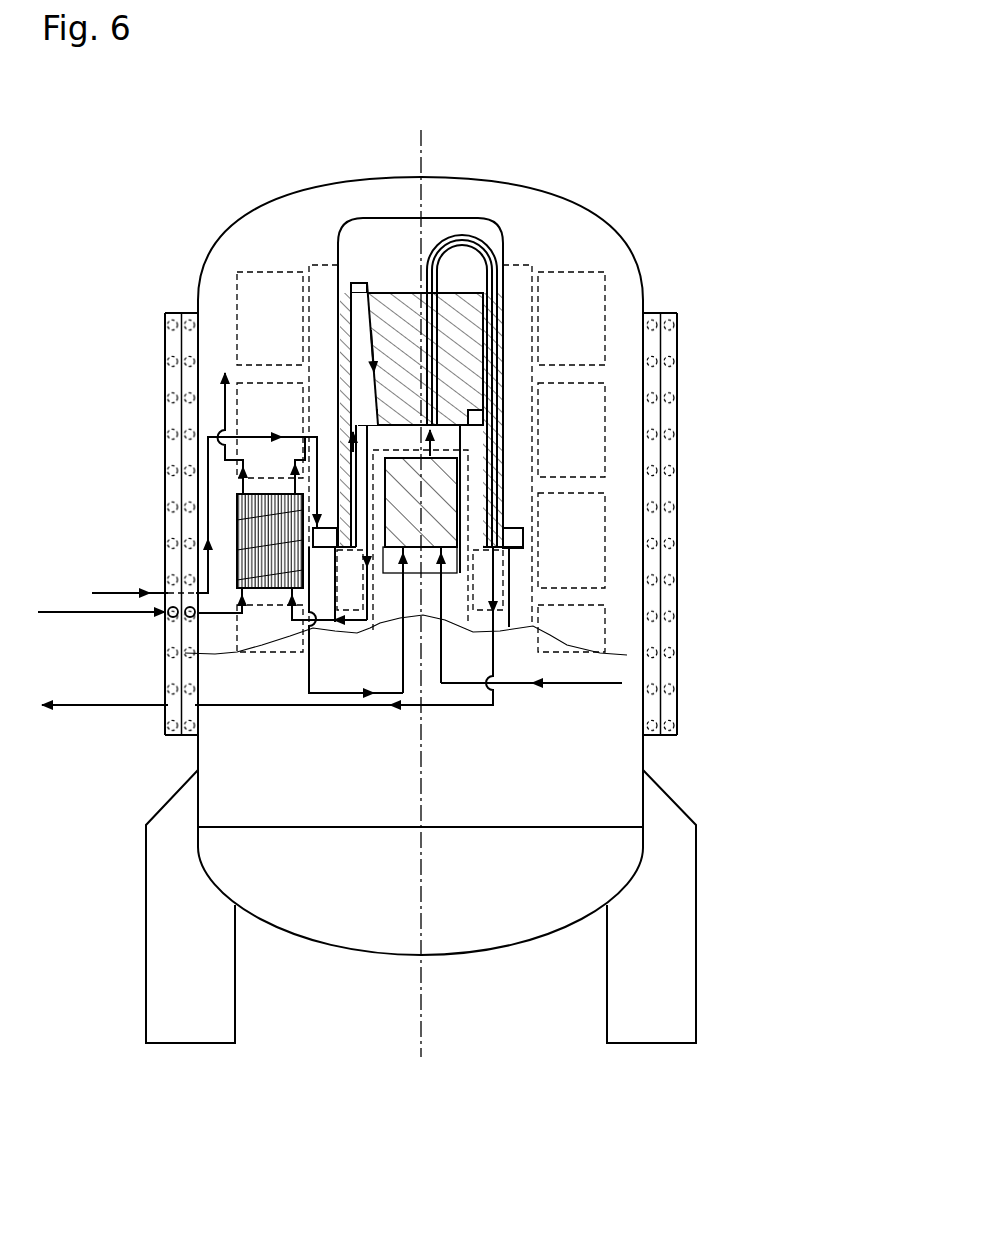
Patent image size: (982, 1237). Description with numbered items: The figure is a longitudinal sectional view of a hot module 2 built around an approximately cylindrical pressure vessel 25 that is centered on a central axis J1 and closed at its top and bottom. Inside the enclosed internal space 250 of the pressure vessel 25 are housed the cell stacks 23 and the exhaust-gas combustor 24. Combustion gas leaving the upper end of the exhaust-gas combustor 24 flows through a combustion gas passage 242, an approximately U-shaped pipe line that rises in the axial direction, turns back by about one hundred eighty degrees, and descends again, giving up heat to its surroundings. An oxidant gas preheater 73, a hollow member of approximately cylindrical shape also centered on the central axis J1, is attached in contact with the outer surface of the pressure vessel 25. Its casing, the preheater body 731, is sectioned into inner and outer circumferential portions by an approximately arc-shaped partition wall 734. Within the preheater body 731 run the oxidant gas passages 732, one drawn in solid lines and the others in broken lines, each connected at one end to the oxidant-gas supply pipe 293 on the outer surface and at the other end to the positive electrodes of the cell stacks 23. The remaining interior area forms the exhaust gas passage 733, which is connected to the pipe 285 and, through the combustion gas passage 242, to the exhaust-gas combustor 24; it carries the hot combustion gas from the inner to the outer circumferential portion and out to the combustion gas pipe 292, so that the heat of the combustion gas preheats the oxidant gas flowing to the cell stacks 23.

The hot module 2 is at (177, 140).
The central axis J1 is at (418, 153).
The cell stacks 23 is at (240, 523).
The exhaust-gas combustor 24 is at (440, 525).
The pressure vessel 25 is at (512, 186).
The internal space 250 is at (515, 212).
The combustion gas passage 242 is at (460, 240).
The oxidant gas preheater 73 is at (78, 427).
The preheater body 731 is at (165, 373).
The oxidant gas passage 732 is at (176, 389).
The exhaust gas passage 733 is at (168, 452).
The partition wall 734 is at (180, 673).
The pipe 285 is at (328, 708).
The combustion gas pipe 292 is at (112, 708).
The oxidant-gas supply pipe 293 is at (68, 610).